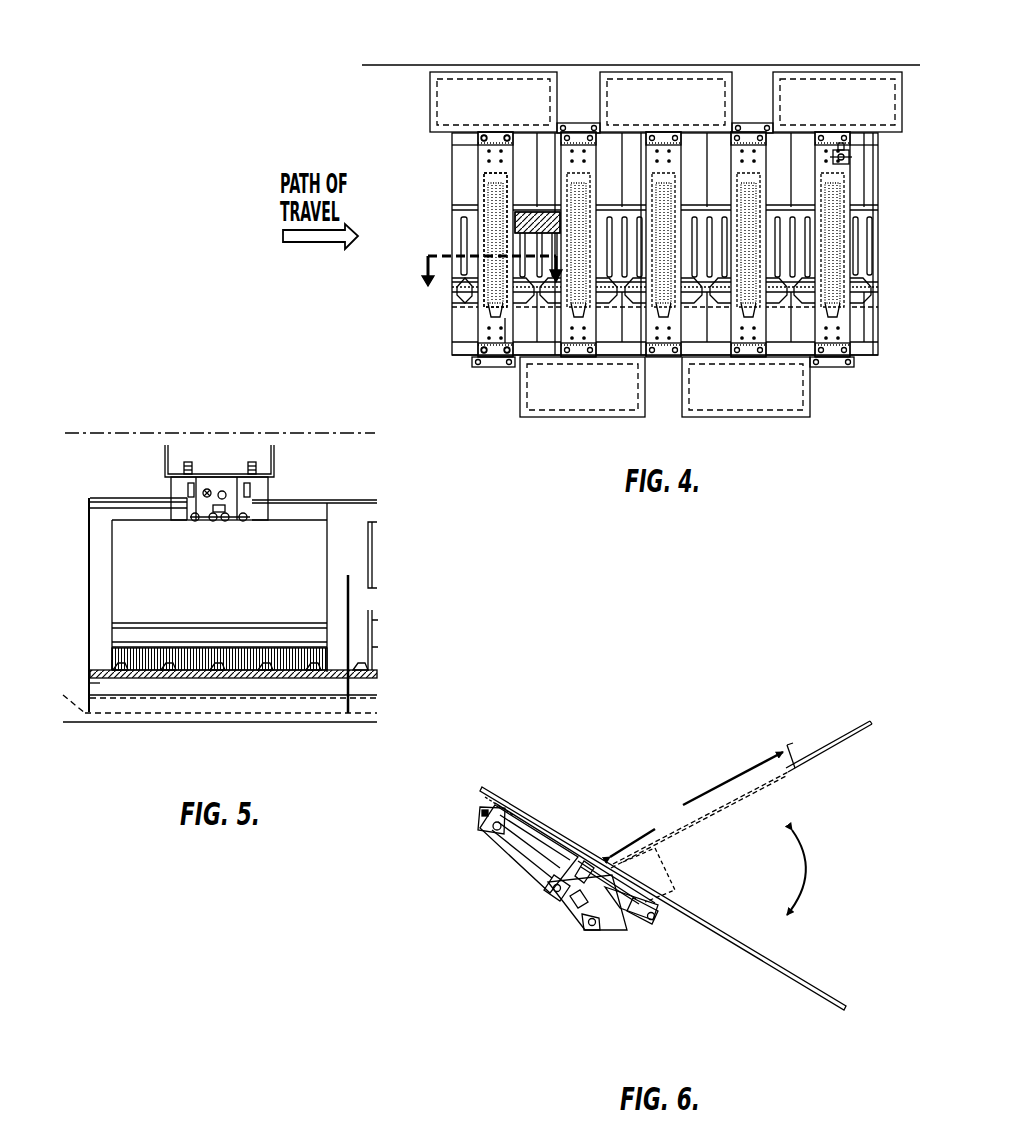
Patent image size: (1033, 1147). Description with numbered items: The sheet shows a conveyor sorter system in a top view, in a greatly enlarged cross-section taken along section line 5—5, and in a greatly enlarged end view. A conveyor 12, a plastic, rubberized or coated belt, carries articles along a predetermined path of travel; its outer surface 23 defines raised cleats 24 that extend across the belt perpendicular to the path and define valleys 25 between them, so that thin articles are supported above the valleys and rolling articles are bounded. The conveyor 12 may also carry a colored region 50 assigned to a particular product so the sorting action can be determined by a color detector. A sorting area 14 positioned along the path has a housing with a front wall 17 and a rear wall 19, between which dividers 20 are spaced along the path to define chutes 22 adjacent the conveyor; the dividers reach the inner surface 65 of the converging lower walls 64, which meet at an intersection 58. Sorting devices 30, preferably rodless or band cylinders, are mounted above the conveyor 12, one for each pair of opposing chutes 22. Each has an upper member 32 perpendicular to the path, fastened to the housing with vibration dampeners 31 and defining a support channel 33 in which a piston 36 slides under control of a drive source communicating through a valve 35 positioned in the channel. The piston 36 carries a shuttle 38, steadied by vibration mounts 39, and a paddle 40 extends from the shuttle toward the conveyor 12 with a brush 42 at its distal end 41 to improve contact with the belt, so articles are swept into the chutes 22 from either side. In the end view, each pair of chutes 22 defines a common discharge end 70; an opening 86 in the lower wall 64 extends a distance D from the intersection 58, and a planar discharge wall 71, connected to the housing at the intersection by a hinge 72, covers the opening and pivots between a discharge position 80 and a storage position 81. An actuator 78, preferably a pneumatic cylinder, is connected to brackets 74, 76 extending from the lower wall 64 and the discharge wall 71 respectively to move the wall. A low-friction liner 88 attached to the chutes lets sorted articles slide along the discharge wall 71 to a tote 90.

In FIG. 4, the conveyor 12 is at (453, 207).
In FIG. 5, the conveyor 12 is at (377, 676).
In FIG. 4, the sorting area 14 is at (488, 422).
In FIG. 4, the front wall 17 is at (462, 333).
In FIG. 4, the rear wall 19 is at (877, 330).
In FIG. 4, the dividers 20 is at (538, 172).
In FIG. 4, the chutes 22 is at (693, 157).
In FIG. 4, the outer surface 23 is at (453, 236).
In FIG. 5, the outer surface 23 is at (100, 678).
In FIG. 4, the cleats 24 is at (452, 247).
In FIG. 5, the cleats 24 is at (114, 670).
In FIG. 5, the valleys 25 is at (333, 670).
In FIG. 4, the sorting device 30 is at (463, 365).
In FIG. 5, the sorting device 30 is at (285, 423).
In FIG. 4, the vibration dampeners 31 is at (505, 136).
In FIG. 5, the vibration dampeners 31 is at (187, 478).
In FIG. 4, the upper member 32 is at (505, 333).
In FIG. 5, the upper member 32 is at (275, 457).
In FIG. 5, the support channel 33 is at (210, 477).
In FIG. 5, the valve 35 is at (207, 493).
In FIG. 5, the piston 36 is at (243, 503).
In FIG. 4, the shuttle 38 is at (465, 290).
In FIG. 5, the shuttle 38 is at (190, 508).
In FIG. 4, the vibration mounts 39 is at (482, 313).
In FIG. 5, the vibration mounts 39 is at (188, 521).
In FIG. 5, the paddle 40 is at (330, 547).
In FIG. 5, the distal end 41 is at (137, 632).
In FIG. 5, the brush 42 is at (300, 660).
In FIG. 4, the colored region 50 is at (515, 212).
In FIG. 4, the section line 5— 5 is at (492, 275).
In FIG. 6, the intersection 58 is at (605, 846).
In FIG. 6, the lower walls 64 is at (812, 748).
In FIG. 6, the inner surface 65 is at (808, 747).
In FIG. 6, the common discharge end 70 is at (865, 853).
In FIG. 6, the discharge wall 71 is at (830, 752).
In FIG. 6, the hinge 72 is at (612, 875).
In FIG. 6, the bracket 74 is at (482, 830).
In FIG. 6, the bracket 76 is at (608, 933).
In FIG. 6, the actuator 78 is at (523, 873).
In FIG. 6, the discharge position 80 is at (786, 889).
In FIG. 6, the storage position 81 is at (788, 808).
In FIG. 6, the opening 86 is at (790, 772).
In FIG. 6, the liner 88 is at (733, 937).
In FIG. 4, the tote 90 is at (477, 72).
In FIG. 6, the distance D is at (696, 804).